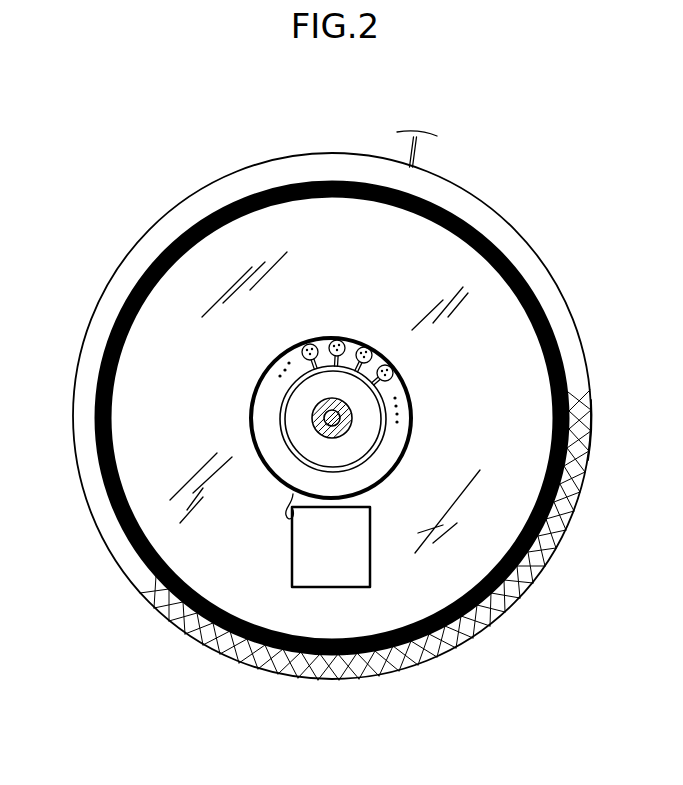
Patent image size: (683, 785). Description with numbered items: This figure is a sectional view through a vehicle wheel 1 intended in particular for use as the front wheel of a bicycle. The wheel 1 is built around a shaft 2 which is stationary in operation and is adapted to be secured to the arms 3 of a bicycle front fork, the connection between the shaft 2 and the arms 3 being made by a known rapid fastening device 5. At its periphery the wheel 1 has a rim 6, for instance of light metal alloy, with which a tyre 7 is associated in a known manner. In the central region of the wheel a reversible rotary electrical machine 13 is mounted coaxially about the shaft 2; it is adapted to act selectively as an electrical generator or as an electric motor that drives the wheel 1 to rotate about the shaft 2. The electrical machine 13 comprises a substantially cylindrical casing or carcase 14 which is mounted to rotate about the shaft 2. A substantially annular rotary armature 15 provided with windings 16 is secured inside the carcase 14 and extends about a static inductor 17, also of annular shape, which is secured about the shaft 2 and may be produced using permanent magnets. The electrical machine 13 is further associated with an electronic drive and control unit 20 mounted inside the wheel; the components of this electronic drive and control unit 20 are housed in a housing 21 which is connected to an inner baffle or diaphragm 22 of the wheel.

The vehicle wheel 1 is at (482, 170).
The shaft 2 is at (311, 429).
The arms of a front fork 3 is at (423, 156).
The rapid fastening device 5 is at (682, 426).
The rim 6 is at (562, 347).
The tyre 7 is at (194, 188).
The reversible rotary electrical machine 13 is at (321, 315).
The casing or carcase 14 is at (404, 472).
The rotary armature 15 is at (351, 345).
The windings 16 is at (386, 372).
The static inductor 17 is at (366, 430).
The electronic drive and control unit 20 is at (276, 547).
The housing 21 is at (350, 573).
The inner baffle or diaphragm 22 is at (194, 282).